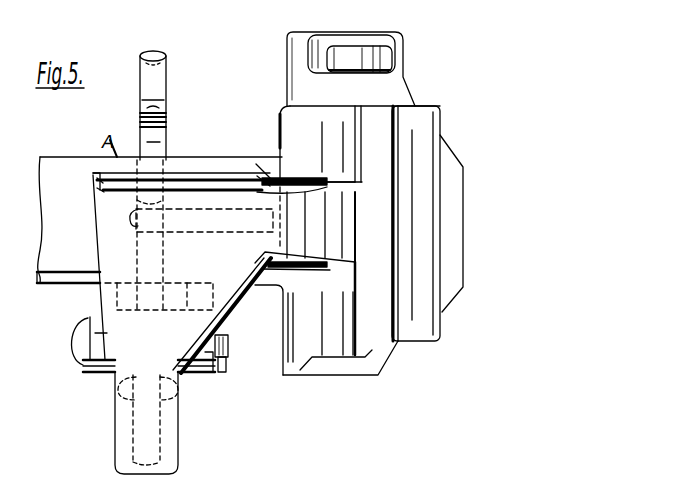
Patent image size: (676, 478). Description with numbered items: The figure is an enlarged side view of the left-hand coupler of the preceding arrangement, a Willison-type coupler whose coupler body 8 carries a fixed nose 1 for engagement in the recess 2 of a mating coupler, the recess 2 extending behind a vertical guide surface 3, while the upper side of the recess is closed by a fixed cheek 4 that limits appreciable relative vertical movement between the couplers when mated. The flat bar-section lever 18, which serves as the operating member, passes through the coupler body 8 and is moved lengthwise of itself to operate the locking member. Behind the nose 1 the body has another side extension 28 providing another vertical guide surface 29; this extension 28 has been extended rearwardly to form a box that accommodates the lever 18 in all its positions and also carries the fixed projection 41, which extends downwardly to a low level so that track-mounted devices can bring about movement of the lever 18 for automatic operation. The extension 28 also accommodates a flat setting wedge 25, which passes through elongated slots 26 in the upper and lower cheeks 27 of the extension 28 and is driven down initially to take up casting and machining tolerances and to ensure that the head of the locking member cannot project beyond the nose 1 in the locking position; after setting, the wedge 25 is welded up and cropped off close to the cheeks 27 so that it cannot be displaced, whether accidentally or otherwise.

The fixed nose 1 is at (428, 128).
The recess 2 is at (375, 63).
The vertical guide surface 3 is at (452, 228).
The fixed cheek 4 is at (342, 42).
The coupler body 8 is at (58, 160).
The lever 18 is at (233, 177).
The setting wedge 25 is at (318, 180).
The elongated slots 26 is at (265, 178).
The cheeks 27 is at (272, 160).
The side extension 28 is at (226, 265).
The vertical guide surface 29 is at (317, 227).
The fixed projection 41 is at (125, 432).